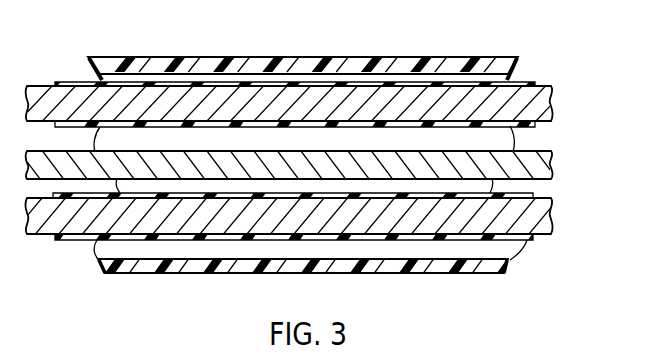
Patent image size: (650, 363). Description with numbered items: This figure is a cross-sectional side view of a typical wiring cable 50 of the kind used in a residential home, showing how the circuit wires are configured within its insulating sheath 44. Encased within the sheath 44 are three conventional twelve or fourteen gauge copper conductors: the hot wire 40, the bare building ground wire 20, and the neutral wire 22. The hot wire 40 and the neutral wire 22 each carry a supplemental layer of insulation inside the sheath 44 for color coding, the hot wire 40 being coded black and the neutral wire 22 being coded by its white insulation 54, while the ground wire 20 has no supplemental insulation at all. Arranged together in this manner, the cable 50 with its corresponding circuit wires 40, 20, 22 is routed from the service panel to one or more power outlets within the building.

The ground wire 20 is at (557, 159).
The neutral wire 22 is at (555, 219).
The hot wire 40 is at (548, 84).
The insulating sheath 44 is at (355, 57).
The cable 50 is at (237, 58).
The white insulation 54 is at (527, 242).